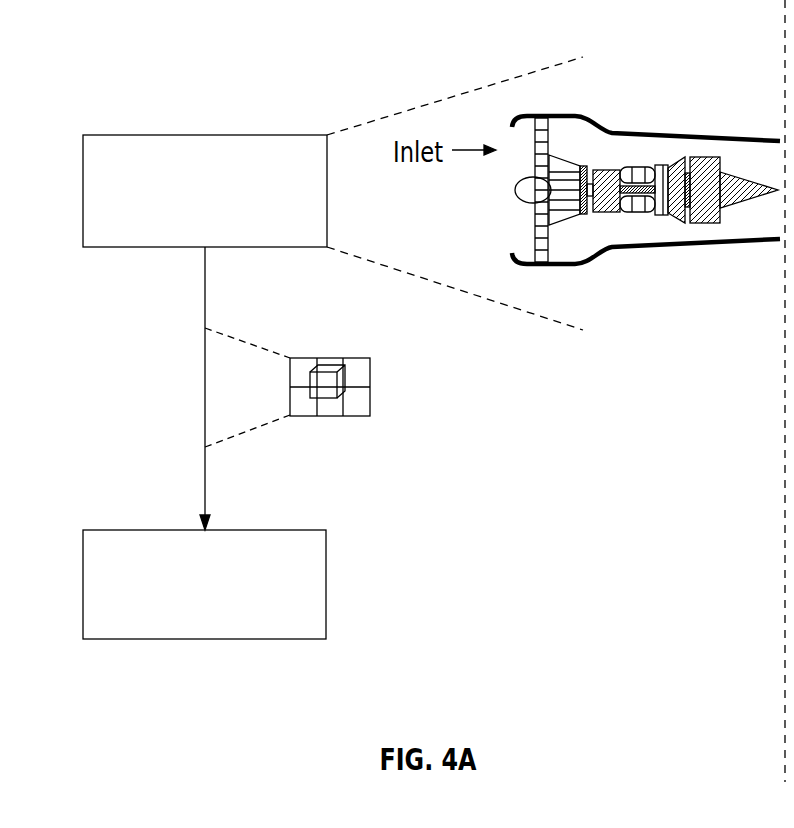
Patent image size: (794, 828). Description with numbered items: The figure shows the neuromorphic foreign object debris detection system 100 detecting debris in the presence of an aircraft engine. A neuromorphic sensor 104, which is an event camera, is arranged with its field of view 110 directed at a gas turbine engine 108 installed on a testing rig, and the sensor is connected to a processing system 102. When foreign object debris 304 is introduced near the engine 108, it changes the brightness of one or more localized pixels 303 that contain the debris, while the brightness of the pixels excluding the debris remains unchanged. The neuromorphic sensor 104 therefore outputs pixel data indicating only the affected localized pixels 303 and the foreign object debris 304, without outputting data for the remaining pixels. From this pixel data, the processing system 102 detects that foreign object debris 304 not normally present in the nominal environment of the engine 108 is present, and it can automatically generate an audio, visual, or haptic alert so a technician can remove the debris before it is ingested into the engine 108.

The neuromorphic foreign object debris detection system 100 is at (203, 46).
The processing system 102 is at (150, 530).
The neuromorphic sensor 104 is at (150, 135).
The gas turbine engine 108 is at (658, 122).
The field of view 110 is at (490, 87).
The localized pixels 303 is at (376, 424).
The foreign object debris 304 is at (327, 367).